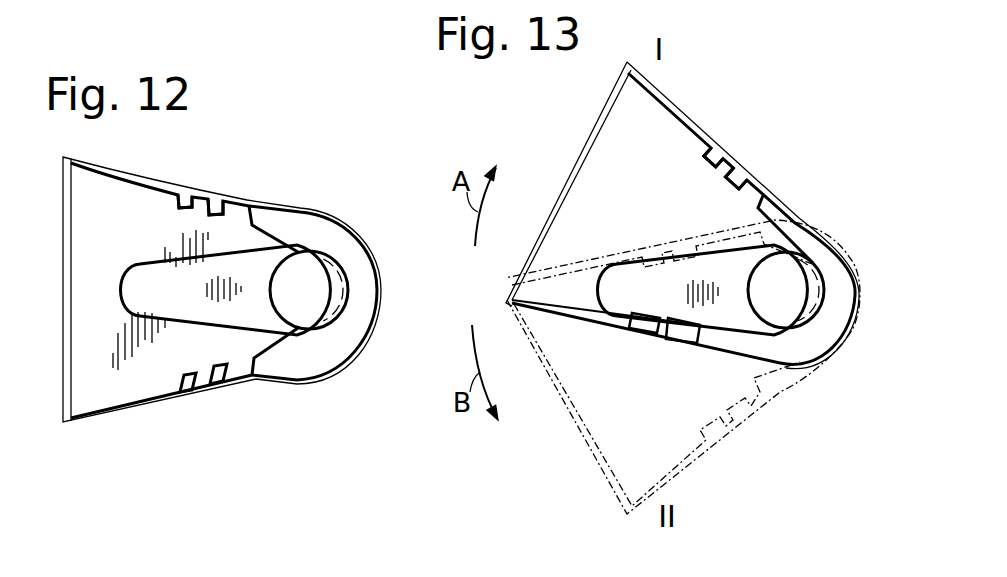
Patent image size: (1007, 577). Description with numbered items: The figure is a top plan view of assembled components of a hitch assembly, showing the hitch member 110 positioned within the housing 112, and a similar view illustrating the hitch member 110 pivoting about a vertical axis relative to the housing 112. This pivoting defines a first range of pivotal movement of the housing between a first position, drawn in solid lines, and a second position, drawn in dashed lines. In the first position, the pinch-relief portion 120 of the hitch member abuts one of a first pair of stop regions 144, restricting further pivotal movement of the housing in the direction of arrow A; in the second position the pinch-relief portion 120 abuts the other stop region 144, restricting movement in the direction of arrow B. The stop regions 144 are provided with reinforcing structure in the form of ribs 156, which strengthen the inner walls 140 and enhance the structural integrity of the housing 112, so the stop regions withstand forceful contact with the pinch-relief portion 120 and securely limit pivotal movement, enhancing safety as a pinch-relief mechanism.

In FIG. 12, the hitch member 110 is at (300, 270).
In FIG. 13, the hitch member 110 is at (807, 283).
In FIG. 12, the housing 112 is at (88, 412).
In FIG. 13, the housing 112 is at (692, 118).
In FIG. 12, the pinch-relief portion 120 is at (153, 302).
In FIG. 13, the pinch-relief portion 120 is at (635, 300).
In FIG. 12, the inner walls 140 is at (115, 192).
In FIG. 13, the inner walls 140 is at (690, 130).
In FIG. 12, the stop regions 144 is at (190, 214).
In FIG. 13, the stop regions 144 is at (706, 179).
In FIG. 12, the ribs 156 is at (226, 209).
In FIG. 13, the ribs 156 is at (728, 165).